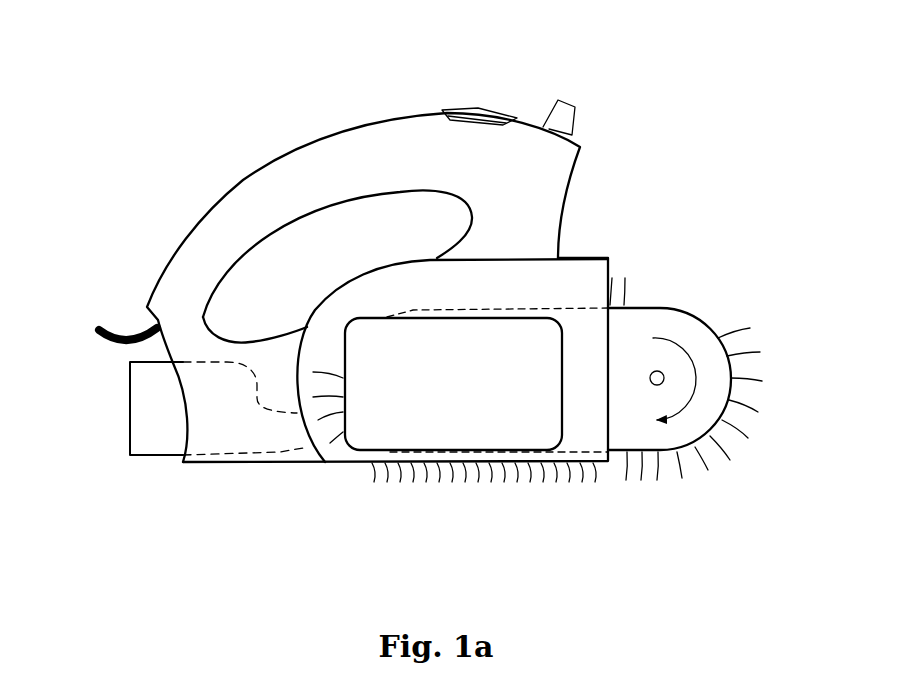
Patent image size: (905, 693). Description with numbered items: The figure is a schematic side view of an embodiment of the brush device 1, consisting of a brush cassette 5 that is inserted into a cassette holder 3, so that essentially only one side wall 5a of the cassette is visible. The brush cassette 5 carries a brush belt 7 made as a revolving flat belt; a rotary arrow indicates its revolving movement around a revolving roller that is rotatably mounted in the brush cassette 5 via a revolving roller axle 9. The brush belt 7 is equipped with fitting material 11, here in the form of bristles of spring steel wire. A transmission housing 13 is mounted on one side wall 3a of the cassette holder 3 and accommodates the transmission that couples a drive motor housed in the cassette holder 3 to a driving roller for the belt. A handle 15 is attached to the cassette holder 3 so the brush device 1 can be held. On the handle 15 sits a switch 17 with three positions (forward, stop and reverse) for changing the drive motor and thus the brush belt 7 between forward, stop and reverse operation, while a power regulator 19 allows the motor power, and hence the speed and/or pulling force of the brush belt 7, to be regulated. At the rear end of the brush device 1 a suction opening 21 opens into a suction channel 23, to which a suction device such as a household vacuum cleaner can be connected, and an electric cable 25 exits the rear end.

The brush device 1 is at (697, 72).
The cassette holder 3 is at (580, 233).
The side wall of the cassette holder 3a is at (587, 288).
The brush cassette 5 is at (602, 357).
The side wall of the brush cassette 5a is at (636, 422).
The brush belt 7 is at (688, 309).
The revolving roller axle 9 is at (650, 370).
The fitting material 11 is at (760, 397).
The transmission housing 13 is at (387, 454).
The handle 15 is at (310, 165).
The switch 17 is at (452, 107).
The power regulator 19 is at (575, 97).
The suction opening 21 is at (303, 440).
The suction channel 23 is at (148, 436).
The electric cable 25 is at (108, 343).